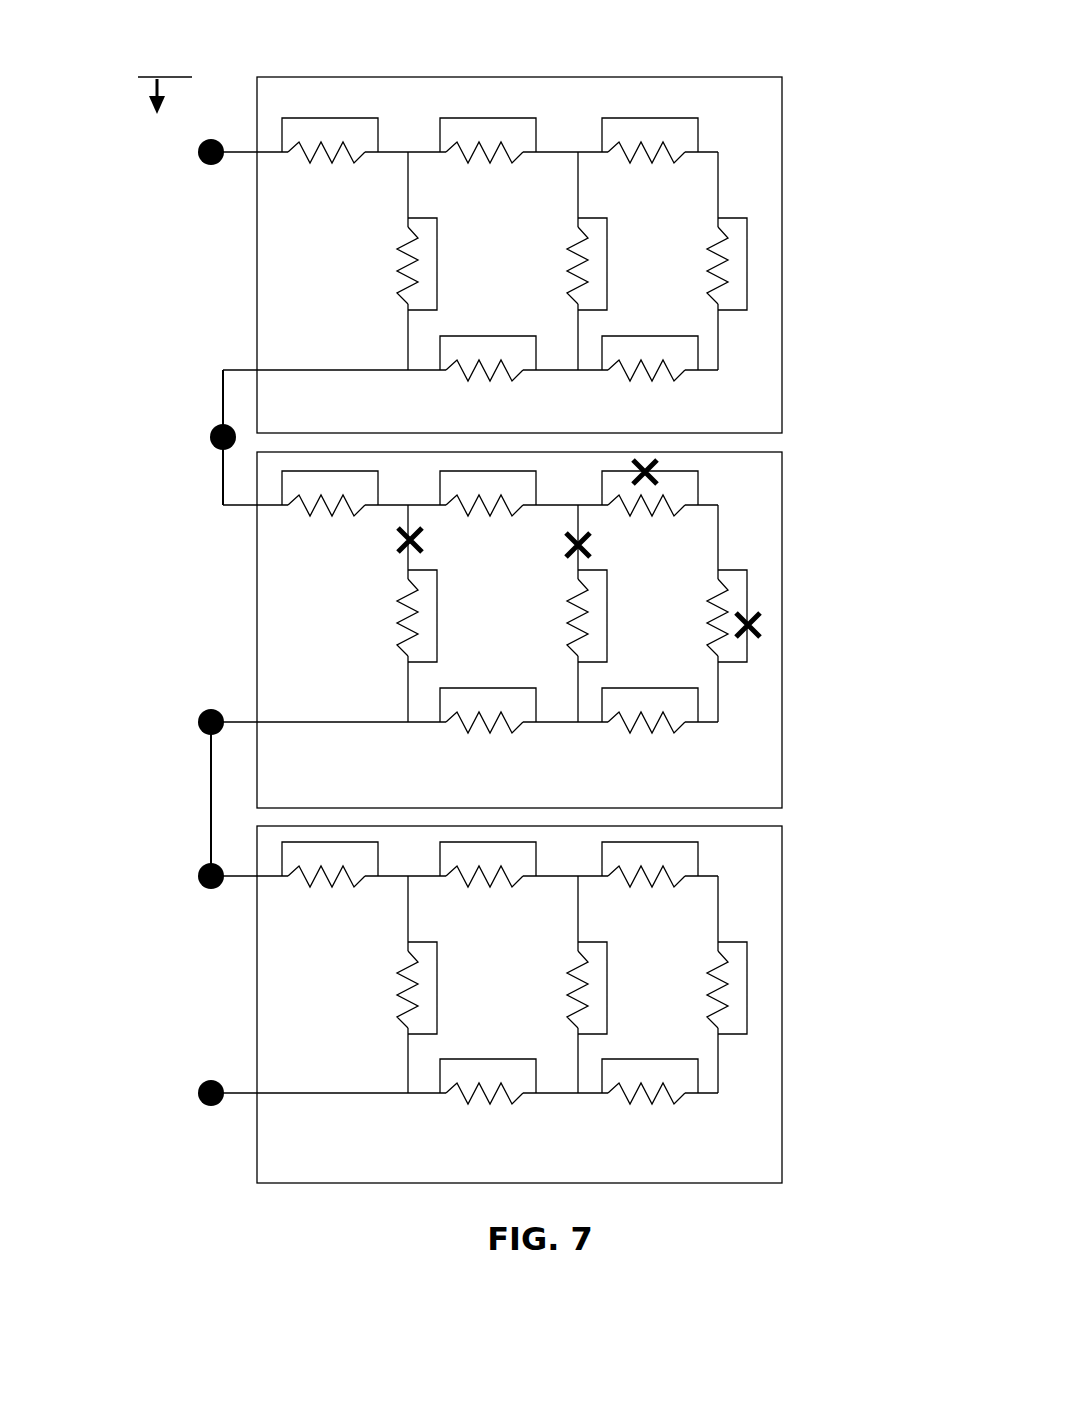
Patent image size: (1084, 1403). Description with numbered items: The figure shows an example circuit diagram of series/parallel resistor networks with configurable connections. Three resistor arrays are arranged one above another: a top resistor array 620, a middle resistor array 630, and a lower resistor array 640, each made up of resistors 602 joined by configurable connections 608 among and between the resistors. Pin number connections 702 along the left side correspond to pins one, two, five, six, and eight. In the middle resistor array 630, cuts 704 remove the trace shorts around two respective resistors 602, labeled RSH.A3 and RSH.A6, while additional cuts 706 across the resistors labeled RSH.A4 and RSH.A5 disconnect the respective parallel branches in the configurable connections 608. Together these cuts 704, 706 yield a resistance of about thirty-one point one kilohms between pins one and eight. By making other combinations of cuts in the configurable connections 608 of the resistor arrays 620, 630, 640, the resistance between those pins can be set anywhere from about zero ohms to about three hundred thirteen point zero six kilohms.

The pin number connections 702 is at (162, 50).
The configurable connections 608 is at (490, 112).
The resistors 602 is at (400, 277).
The top resistor array 620 is at (782, 258).
The middle resistor array 630 is at (782, 625).
The bottom resistor array 640 is at (782, 995).
The cuts 704 is at (752, 612).
The additional cuts 706 is at (422, 556).